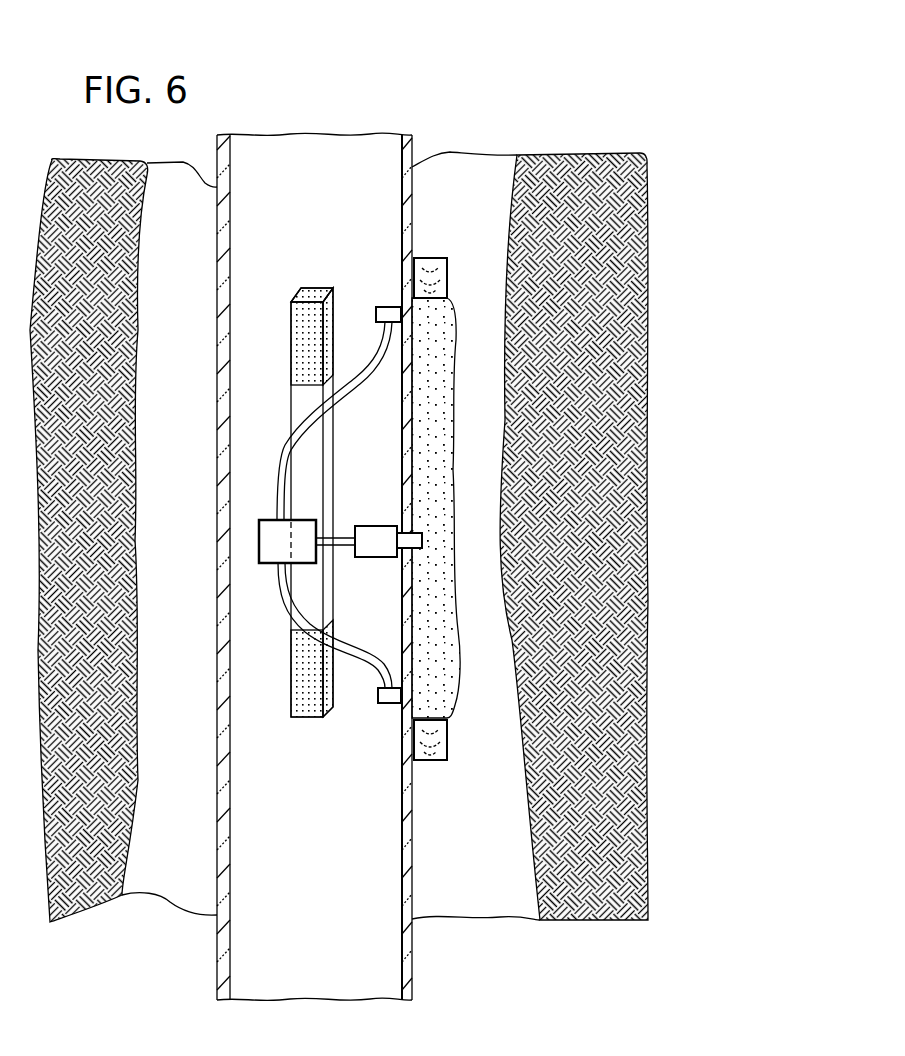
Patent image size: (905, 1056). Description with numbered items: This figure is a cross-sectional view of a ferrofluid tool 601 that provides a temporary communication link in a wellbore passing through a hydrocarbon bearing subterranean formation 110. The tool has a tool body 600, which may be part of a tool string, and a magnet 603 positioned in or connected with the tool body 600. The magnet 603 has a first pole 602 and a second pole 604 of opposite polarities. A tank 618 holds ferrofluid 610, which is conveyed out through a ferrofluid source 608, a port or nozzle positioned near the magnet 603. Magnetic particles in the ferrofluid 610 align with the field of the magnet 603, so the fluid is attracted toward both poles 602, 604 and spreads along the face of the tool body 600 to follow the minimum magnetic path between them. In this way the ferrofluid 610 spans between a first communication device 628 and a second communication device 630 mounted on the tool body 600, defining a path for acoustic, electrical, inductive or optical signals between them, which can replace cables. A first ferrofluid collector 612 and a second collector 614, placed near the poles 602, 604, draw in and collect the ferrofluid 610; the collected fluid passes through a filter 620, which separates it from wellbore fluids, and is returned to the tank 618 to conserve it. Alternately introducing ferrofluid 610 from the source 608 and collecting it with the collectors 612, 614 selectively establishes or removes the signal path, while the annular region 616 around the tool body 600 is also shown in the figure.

The subterranean formation 110 is at (613, 386).
The tool body 600 is at (326, 181).
The ferrofluid tool 601 is at (423, 93).
The first pole 602 is at (302, 287).
The magnet 603 is at (291, 408).
The second pole 604 is at (300, 717).
The ferrofluid source 608 is at (395, 530).
The ferrofluid 610 is at (445, 342).
The first ferrofluid collector 612 is at (385, 307).
The second ferrofluid collector 614 is at (390, 703).
The annulus 616 is at (458, 165).
The tank 618 is at (326, 582).
The filter 620 is at (267, 540).
The first communication device 628 is at (432, 258).
The second communication device 630 is at (433, 760).